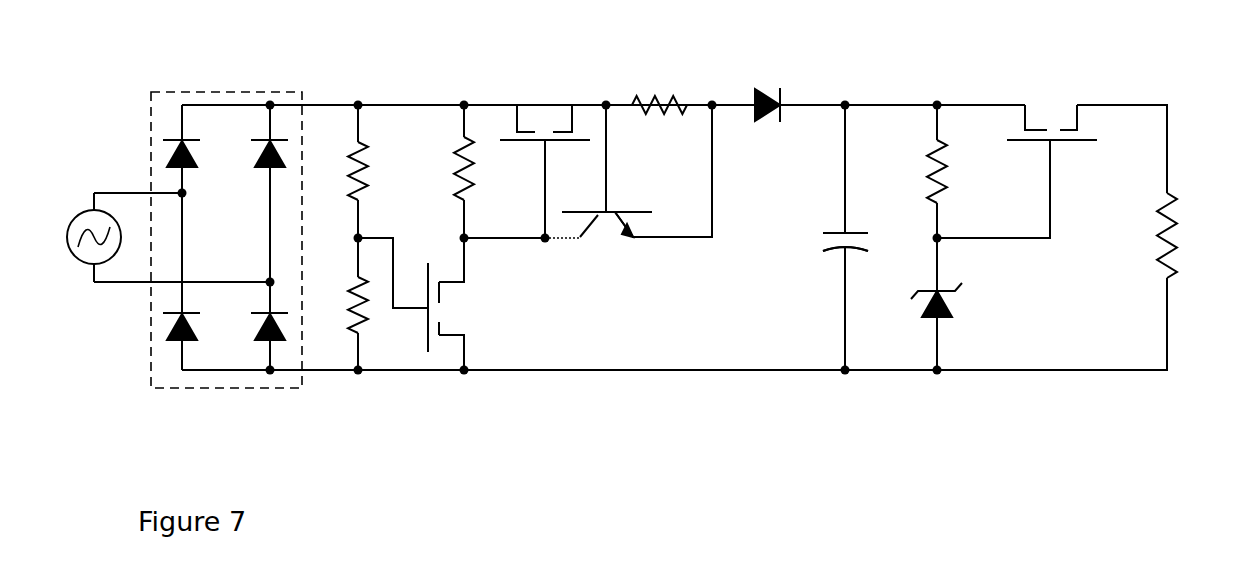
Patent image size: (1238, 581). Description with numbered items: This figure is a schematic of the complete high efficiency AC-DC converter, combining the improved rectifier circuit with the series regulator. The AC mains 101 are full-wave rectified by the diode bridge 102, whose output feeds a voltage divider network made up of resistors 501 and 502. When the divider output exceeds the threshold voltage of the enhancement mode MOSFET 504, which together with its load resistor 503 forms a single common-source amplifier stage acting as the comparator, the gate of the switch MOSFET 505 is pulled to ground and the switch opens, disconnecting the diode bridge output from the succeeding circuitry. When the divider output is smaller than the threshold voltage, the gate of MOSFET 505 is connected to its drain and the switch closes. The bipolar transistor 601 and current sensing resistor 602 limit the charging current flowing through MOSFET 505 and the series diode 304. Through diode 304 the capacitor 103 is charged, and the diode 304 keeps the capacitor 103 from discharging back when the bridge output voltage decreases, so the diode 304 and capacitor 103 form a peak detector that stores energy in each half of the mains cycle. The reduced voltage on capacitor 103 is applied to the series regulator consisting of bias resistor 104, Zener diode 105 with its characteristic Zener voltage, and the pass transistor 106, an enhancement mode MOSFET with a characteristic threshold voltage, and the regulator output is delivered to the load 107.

The AC mains 101 is at (72, 223).
The diode bridge 102 is at (230, 90).
The capacitor 103 is at (818, 242).
The bias resistor 104 is at (920, 175).
The Zener diode 105 is at (942, 320).
The pass transistor 106 is at (1052, 102).
The load 107 is at (1180, 237).
The series diode 304 is at (760, 92).
The resistor 501 is at (368, 173).
The resistor 502 is at (370, 307).
The load resistor 503 is at (477, 177).
The MOSFET 504 is at (463, 312).
The MOSFET 505 is at (542, 100).
The bipolar transistor 601 is at (605, 238).
The current sensing resistor 602 is at (650, 92).